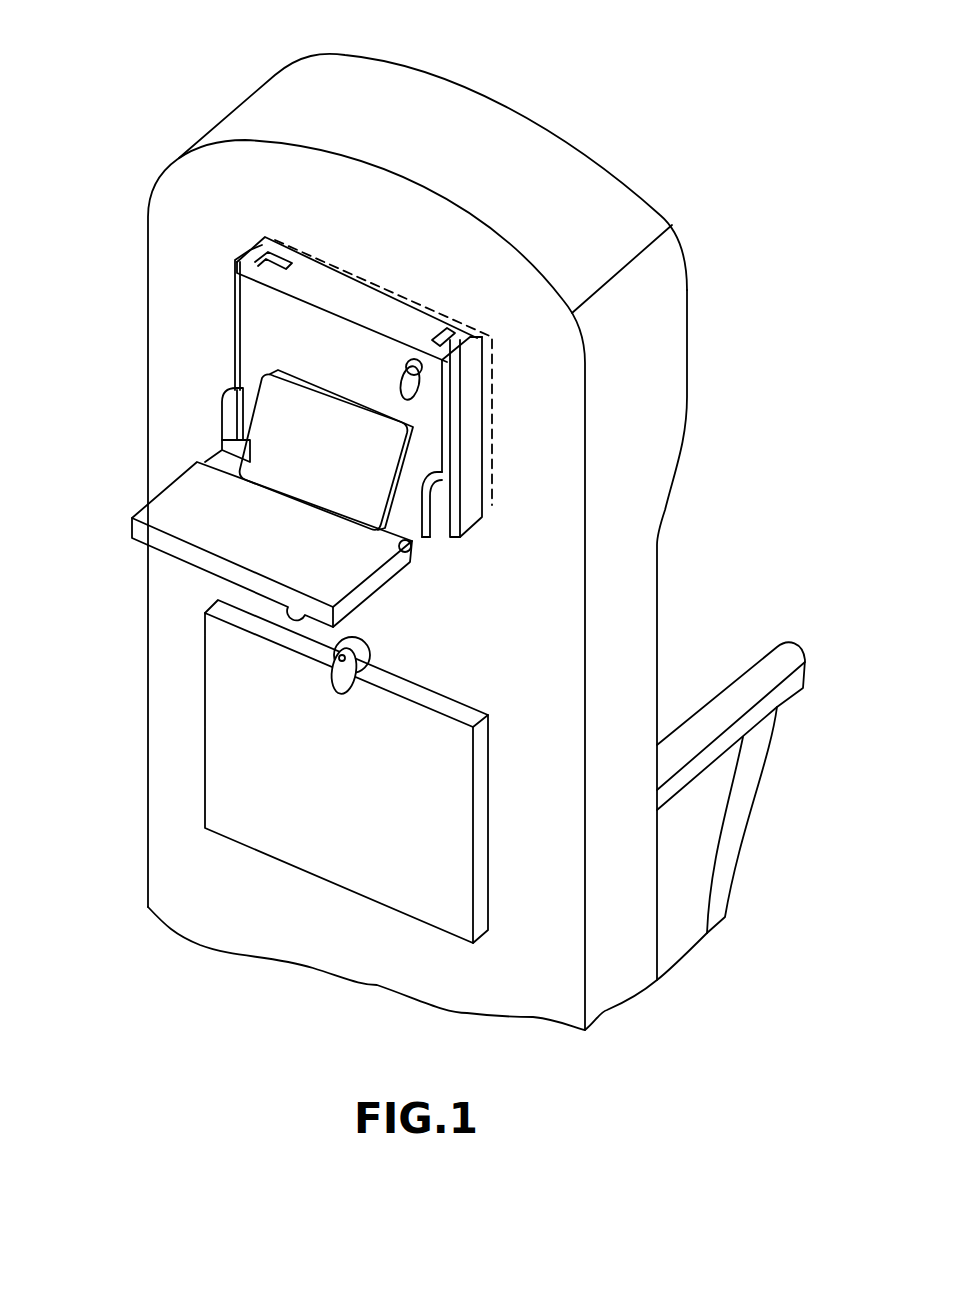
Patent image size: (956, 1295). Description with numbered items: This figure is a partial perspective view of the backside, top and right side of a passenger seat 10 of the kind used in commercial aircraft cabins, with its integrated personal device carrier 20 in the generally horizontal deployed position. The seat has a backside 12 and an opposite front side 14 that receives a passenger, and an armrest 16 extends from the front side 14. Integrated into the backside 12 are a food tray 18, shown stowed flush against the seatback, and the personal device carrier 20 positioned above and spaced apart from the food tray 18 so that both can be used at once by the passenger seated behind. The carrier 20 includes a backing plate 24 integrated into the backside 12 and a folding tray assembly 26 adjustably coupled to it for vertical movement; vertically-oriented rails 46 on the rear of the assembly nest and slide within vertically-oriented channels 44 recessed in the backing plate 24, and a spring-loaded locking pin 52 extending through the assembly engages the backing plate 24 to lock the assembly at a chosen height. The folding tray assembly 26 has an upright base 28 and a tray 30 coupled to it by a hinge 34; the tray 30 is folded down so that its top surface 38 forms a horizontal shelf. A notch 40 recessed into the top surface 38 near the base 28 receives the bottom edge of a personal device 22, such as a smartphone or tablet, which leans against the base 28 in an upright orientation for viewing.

The passenger seat 10 is at (120, 240).
The backside 12 is at (205, 177).
The front side 14 is at (688, 287).
The armrest 16 is at (765, 668).
The food tray 18 is at (237, 755).
The personal device carrier 20 is at (217, 346).
The personal device 22 is at (372, 458).
The backing plate 24 is at (328, 286).
The folding tray assembly 26 is at (422, 458).
The base 28 is at (248, 307).
The tray 30 is at (248, 538).
The hinge 34 is at (236, 420).
The top surface 38 is at (281, 542).
The notch 40 is at (436, 541).
The channel 44 is at (480, 340).
The rail 46 is at (446, 330).
The spring-loaded locking pin 52 is at (398, 378).